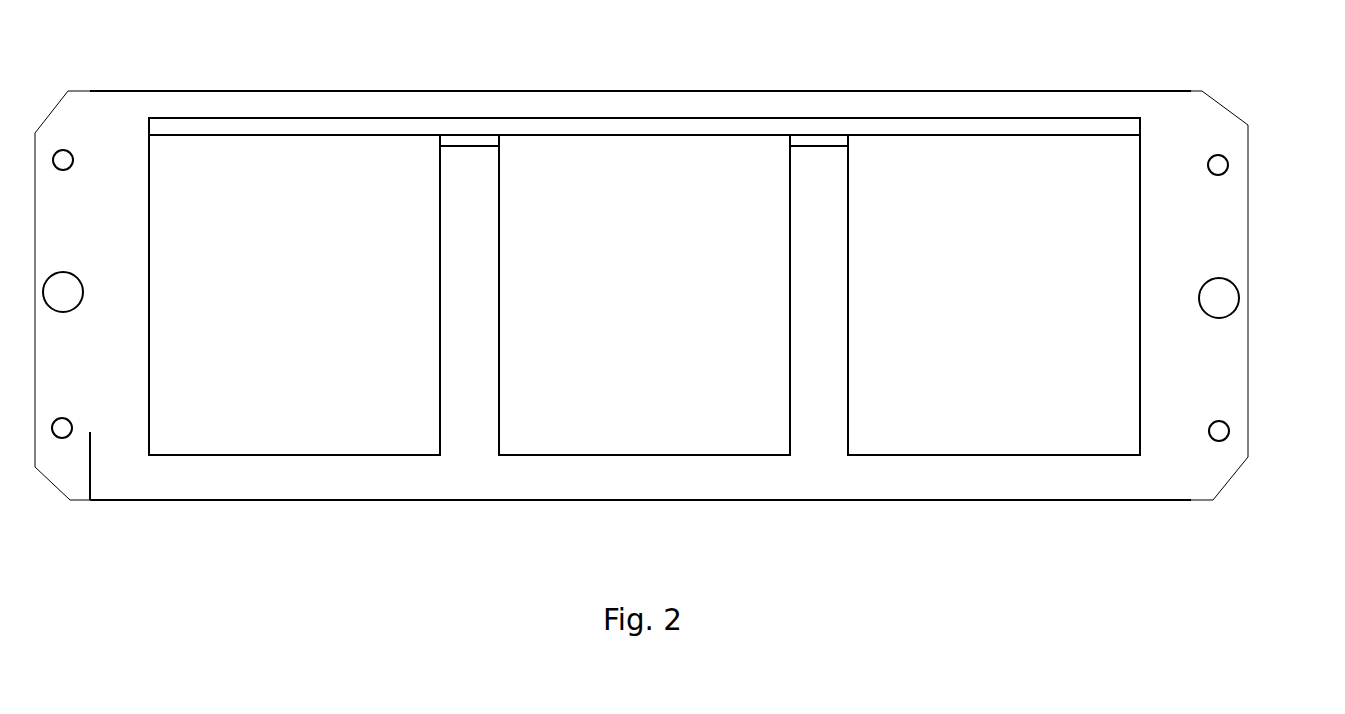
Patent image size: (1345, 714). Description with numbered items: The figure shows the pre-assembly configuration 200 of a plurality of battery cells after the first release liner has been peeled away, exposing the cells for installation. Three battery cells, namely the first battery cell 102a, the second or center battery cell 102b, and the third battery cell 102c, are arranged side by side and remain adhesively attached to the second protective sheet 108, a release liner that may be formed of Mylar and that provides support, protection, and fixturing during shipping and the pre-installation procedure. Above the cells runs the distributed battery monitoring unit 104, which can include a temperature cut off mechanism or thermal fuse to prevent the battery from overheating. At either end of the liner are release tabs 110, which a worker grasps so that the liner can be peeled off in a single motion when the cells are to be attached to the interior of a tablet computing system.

The pre-assembly configuration 200 is at (1097, 597).
The second protective sheet 108 is at (242, 91).
The release tabs 110 is at (1249, 200).
The distributed battery monitoring unit 104 is at (635, 117).
The first battery cell 102a is at (324, 295).
The second battery cell 102b is at (673, 295).
The third battery cell 102c is at (994, 295).